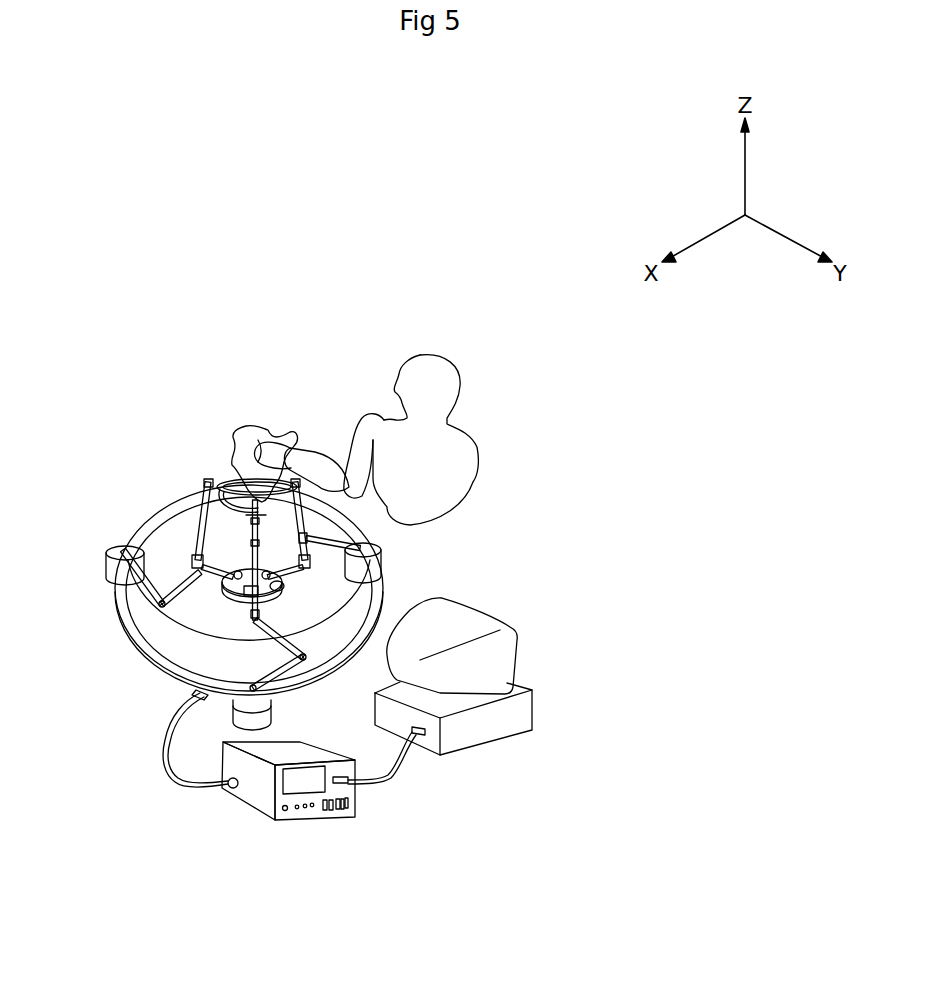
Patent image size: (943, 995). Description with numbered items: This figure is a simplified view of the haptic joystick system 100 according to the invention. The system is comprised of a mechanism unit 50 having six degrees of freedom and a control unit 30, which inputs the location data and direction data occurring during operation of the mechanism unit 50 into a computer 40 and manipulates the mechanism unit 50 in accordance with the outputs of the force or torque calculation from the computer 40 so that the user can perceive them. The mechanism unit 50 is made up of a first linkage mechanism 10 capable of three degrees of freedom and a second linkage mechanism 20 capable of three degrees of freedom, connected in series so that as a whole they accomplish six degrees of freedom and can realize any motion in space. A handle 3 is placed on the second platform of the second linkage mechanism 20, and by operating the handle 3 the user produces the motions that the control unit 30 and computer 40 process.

The haptic joystick system 100 is at (105, 394).
The handle 3 is at (265, 428).
The first linkage mechanism 10 is at (143, 527).
The second linkage mechanism 20 is at (198, 515).
The control unit 30 is at (228, 755).
The computer 40 is at (473, 618).
The mechanism unit 50 is at (150, 622).